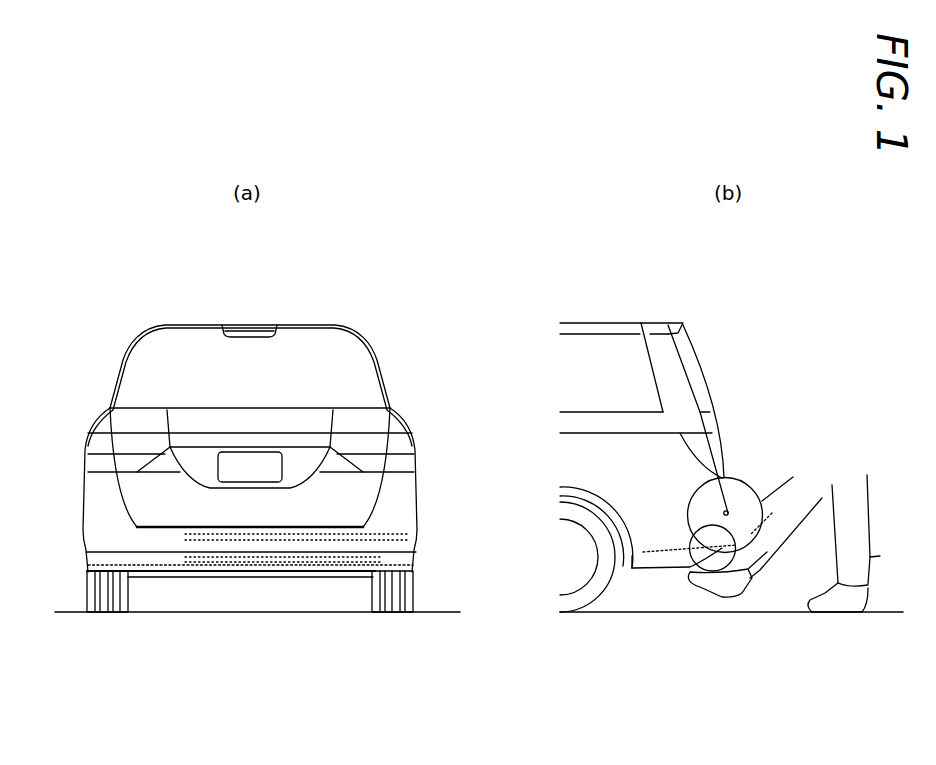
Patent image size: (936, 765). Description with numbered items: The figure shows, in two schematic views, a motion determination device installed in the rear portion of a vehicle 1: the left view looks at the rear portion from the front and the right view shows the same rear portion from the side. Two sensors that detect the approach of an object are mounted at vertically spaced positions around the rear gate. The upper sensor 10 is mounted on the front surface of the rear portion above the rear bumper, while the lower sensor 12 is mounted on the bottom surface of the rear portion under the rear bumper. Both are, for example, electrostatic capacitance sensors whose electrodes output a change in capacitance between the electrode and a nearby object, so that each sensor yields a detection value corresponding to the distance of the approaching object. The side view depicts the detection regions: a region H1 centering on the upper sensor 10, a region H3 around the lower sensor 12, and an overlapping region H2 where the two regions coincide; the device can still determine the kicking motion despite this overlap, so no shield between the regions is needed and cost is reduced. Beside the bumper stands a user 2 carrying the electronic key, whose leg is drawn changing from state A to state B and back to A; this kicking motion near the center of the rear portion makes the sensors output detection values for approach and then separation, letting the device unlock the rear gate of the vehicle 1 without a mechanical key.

The vehicle 1 is at (400, 334).
The user 2 is at (866, 447).
The upper sensor 10 is at (335, 525).
The lower sensor 12 is at (358, 556).
The leg state A is at (870, 557).
The leg state B is at (764, 500).
The sensor detection region H1 is at (728, 508).
The overlapping region H2 is at (690, 525).
The sensor detection region H3 is at (716, 560).